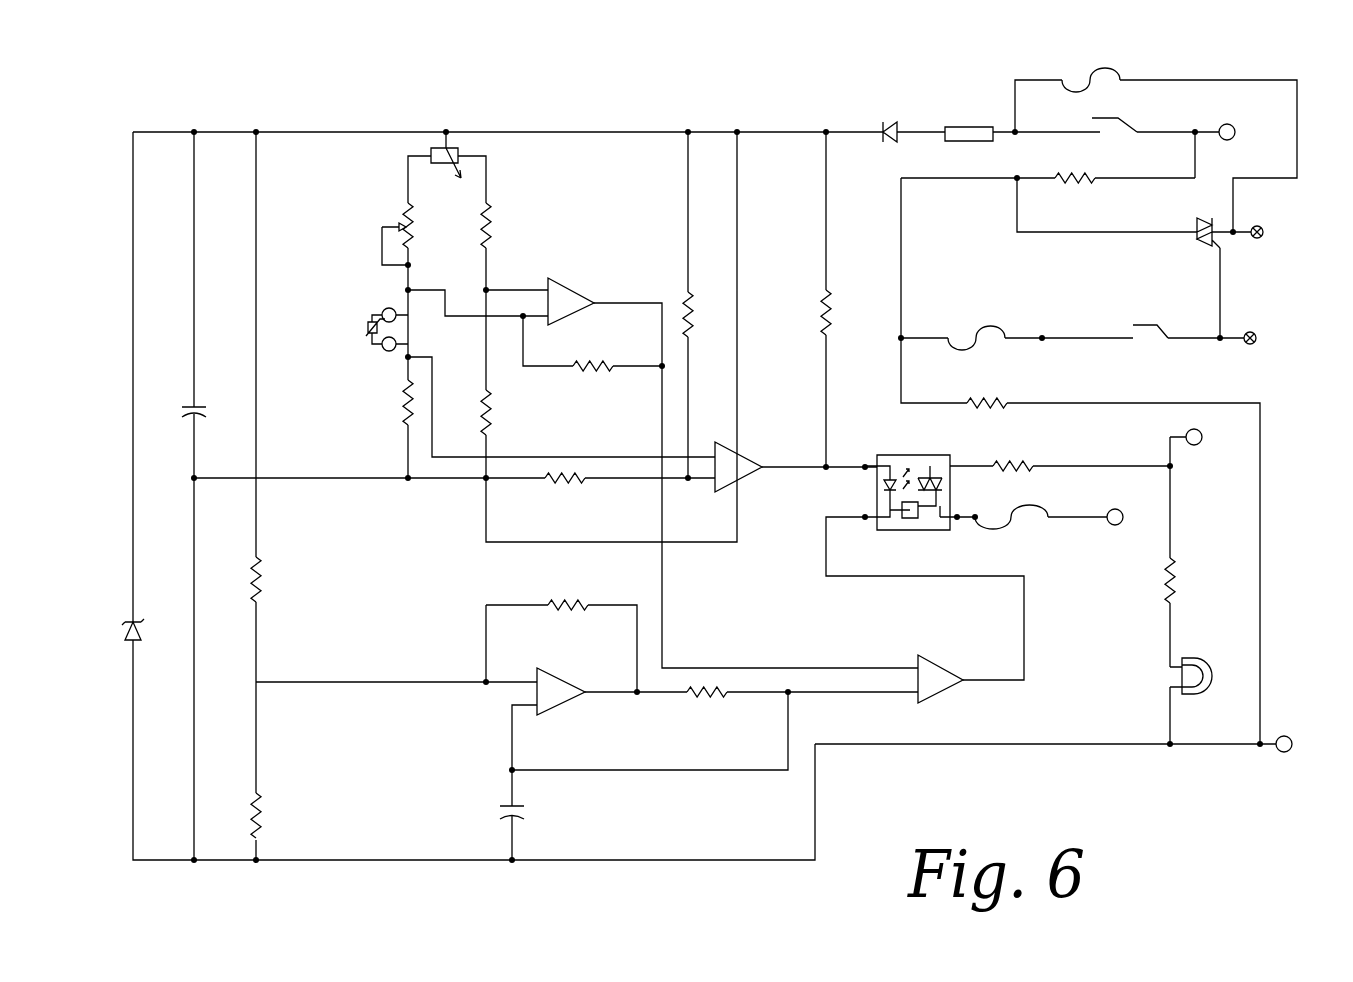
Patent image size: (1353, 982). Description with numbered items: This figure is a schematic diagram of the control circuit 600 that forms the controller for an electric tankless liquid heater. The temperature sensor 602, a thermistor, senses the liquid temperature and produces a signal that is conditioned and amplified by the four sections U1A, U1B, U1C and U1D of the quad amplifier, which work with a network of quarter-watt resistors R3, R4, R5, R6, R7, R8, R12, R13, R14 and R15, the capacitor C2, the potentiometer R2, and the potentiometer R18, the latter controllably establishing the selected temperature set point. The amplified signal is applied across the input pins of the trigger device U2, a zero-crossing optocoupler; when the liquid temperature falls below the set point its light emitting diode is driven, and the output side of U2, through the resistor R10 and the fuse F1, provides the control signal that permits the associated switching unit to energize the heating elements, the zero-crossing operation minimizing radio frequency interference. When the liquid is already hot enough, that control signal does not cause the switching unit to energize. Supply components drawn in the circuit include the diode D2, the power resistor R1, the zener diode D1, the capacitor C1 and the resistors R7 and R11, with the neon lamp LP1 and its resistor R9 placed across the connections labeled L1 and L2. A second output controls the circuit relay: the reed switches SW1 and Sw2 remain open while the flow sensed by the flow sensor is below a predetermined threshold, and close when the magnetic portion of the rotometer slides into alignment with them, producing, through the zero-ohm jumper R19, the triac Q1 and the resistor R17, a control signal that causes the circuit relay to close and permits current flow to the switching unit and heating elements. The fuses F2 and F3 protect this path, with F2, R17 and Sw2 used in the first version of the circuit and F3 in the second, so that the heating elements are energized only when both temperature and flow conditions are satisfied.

The control circuit 600 is at (1168, 780).
The temperature sensor 602 is at (376, 358).
The power resistor R1 is at (969, 124).
The potentiometer R2 is at (424, 161).
The resistor R3 is at (278, 579).
The resistor R4 is at (503, 225).
The resistor R5 is at (502, 413).
The resistor R6 is at (593, 389).
The resistor R7 is at (701, 314).
The resistor R8 is at (565, 500).
The resistor R9 is at (1193, 580).
The resistor R10 is at (1013, 467).
The resistor R11 is at (842, 312).
The resistor R12 is at (707, 715).
The resistor R13 is at (566, 586).
The resistor R14 is at (278, 815).
The resistor R15 is at (391, 402).
The resistor R17 is at (987, 404).
The potentiometer R18 is at (416, 227).
The resistor R19 is at (1102, 182).
The capacitor C1 is at (209, 411).
The capacitor C2 is at (523, 816).
The zener diode D1 is at (106, 629).
The diode D2 is at (891, 133).
The LM324N amplifier section U1A is at (575, 690).
The LM324N amplifier section U1B is at (955, 684).
The LM324N amplifier section U1C is at (583, 298).
The LM324N amplifier section U1D is at (751, 467).
The trigger device U2 is at (914, 493).
The triac Q1 is at (1186, 245).
The fuse F1 is at (1018, 534).
The fuse F2 is at (976, 330).
The fuse F3 is at (1091, 88).
The relay switch SW1 is at (1113, 137).
The relay switch Sw2 is at (1151, 343).
The neon lamp LP1 is at (1197, 675).
The line terminal L1 is at (1249, 132).
The line terminal L2 is at (1305, 743).